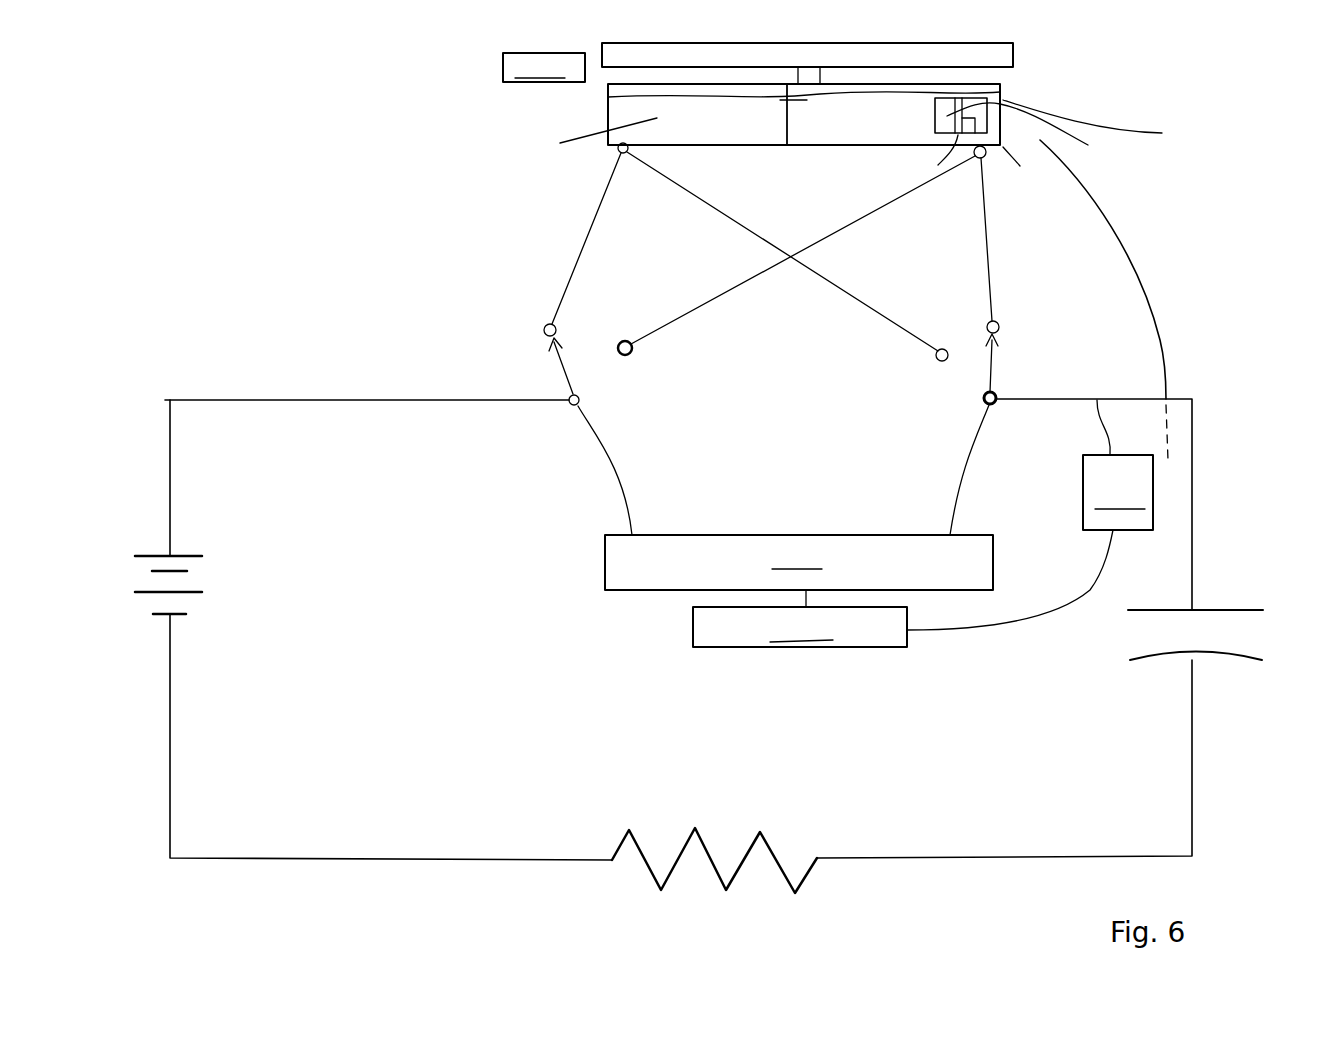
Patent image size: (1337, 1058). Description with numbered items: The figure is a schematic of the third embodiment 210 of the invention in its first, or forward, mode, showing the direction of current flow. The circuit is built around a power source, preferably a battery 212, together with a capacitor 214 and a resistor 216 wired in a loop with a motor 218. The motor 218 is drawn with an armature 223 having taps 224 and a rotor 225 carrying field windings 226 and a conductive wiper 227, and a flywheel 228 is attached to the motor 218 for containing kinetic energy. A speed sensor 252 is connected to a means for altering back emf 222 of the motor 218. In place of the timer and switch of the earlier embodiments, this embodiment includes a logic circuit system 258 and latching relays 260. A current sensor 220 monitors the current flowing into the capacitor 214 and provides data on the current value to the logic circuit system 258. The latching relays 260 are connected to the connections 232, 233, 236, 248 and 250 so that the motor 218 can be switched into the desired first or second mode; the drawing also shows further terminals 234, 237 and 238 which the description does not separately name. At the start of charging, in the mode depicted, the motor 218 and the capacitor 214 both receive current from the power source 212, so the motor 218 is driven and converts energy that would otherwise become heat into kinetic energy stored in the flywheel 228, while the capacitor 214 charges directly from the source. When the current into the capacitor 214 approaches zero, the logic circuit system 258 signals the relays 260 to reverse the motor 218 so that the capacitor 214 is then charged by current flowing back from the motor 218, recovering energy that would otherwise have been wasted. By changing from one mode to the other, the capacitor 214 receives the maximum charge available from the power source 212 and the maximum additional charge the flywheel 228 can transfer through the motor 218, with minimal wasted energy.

The third embodiment 210 is at (1215, 203).
The battery 212 is at (219, 572).
The capacitor 214 is at (1227, 603).
The resistor 216 is at (770, 820).
The motor 218 is at (590, 114).
The current sensor 220 is at (1118, 465).
The means for altering back emf 222 is at (1005, 94).
The armature 223 is at (570, 141).
The taps 224 is at (927, 162).
The rotor 225 is at (1110, 129).
The field windings 226 is at (1048, 136).
The conductive wiper 227 is at (1039, 168).
The flywheel 228 is at (1013, 53).
The connection 232 is at (544, 335).
The connection 233 is at (1000, 332).
The first terminal 234 is at (613, 153).
The connection 236 is at (633, 352).
The fourth contact 237 is at (943, 362).
The second terminal 238 is at (987, 154).
The connection 248 is at (568, 410).
The connection 250 is at (998, 392).
The speed sensor 252 is at (607, 97).
The logic circuit system 258 is at (903, 588).
The latching relays 260 is at (799, 571).